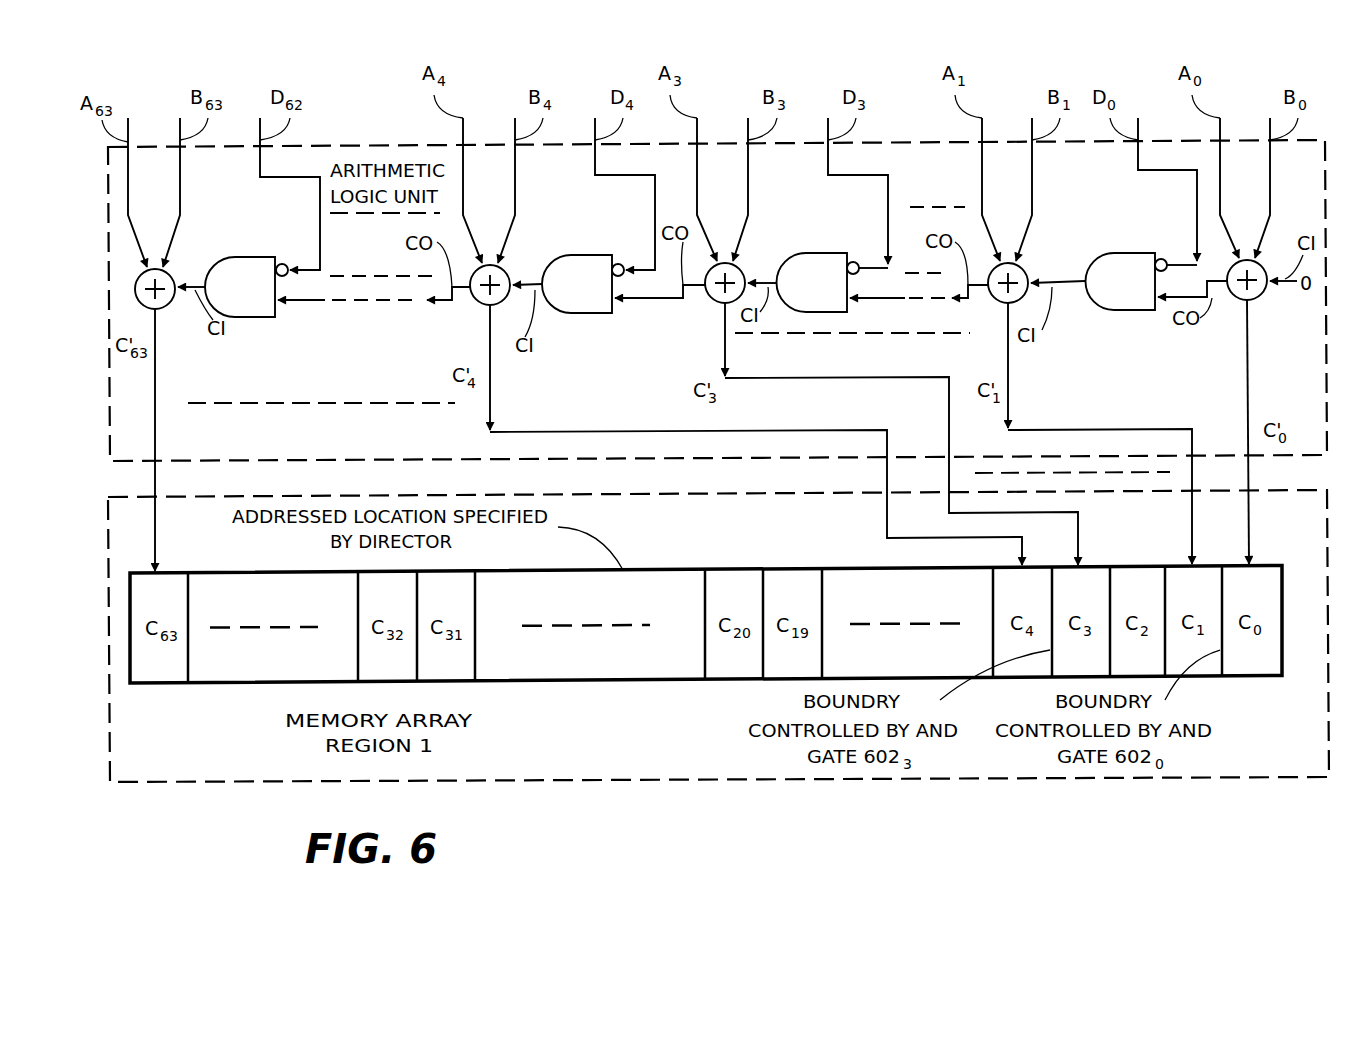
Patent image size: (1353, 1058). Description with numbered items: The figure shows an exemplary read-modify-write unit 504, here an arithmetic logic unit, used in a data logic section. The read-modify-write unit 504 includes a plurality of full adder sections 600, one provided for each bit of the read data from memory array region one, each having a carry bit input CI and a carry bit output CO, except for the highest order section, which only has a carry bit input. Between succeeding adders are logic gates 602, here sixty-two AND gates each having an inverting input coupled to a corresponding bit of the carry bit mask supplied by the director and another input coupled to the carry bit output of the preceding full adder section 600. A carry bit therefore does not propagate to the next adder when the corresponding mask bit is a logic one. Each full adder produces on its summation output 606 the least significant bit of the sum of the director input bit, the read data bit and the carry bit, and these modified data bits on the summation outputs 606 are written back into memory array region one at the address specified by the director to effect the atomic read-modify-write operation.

The read-modify-write unit 504 is at (370, 147).
The full adder section 600 is at (1240, 300).
The logic gate 602 is at (1140, 253).
The summation output 606 is at (157, 412).